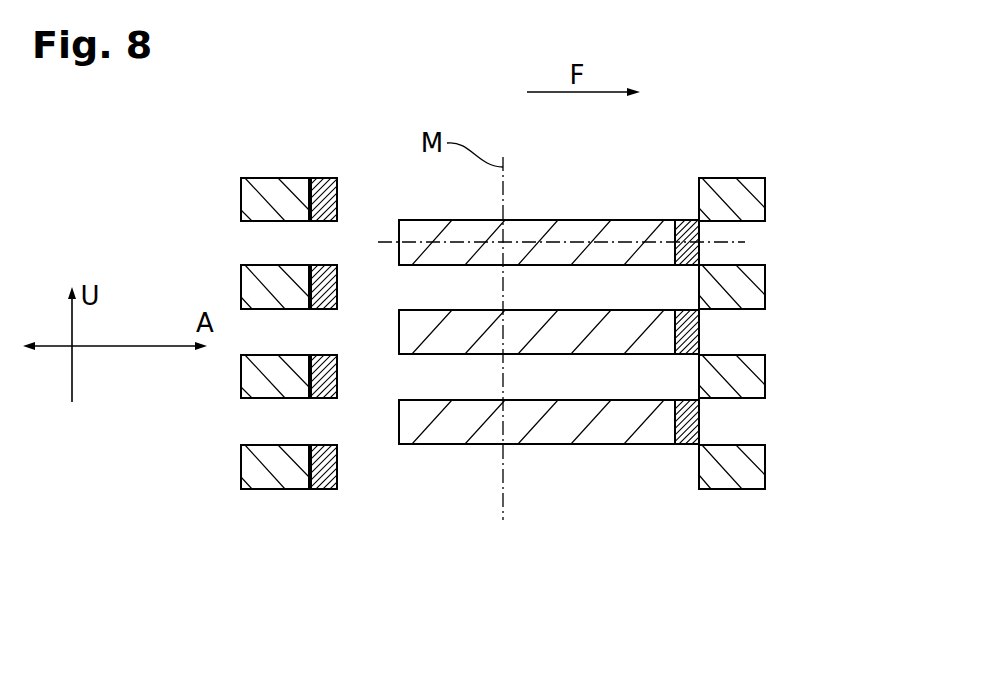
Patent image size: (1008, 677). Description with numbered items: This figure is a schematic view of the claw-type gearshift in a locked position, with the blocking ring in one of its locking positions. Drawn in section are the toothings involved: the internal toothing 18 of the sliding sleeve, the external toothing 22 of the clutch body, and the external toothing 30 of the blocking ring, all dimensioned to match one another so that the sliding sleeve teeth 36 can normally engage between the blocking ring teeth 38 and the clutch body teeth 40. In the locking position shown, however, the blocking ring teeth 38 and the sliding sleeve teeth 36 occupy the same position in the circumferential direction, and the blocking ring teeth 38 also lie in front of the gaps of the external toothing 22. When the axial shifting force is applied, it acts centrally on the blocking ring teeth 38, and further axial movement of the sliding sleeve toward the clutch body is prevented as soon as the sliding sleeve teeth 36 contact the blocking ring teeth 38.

The internal toothing 18 is at (523, 328).
The external toothing 22 is at (501, 341).
The external toothing 30 is at (316, 511).
The sliding sleeve teeth 36 is at (617, 222).
The blocking ring teeth 38 is at (327, 186).
The clutch body teeth 40 is at (268, 186).